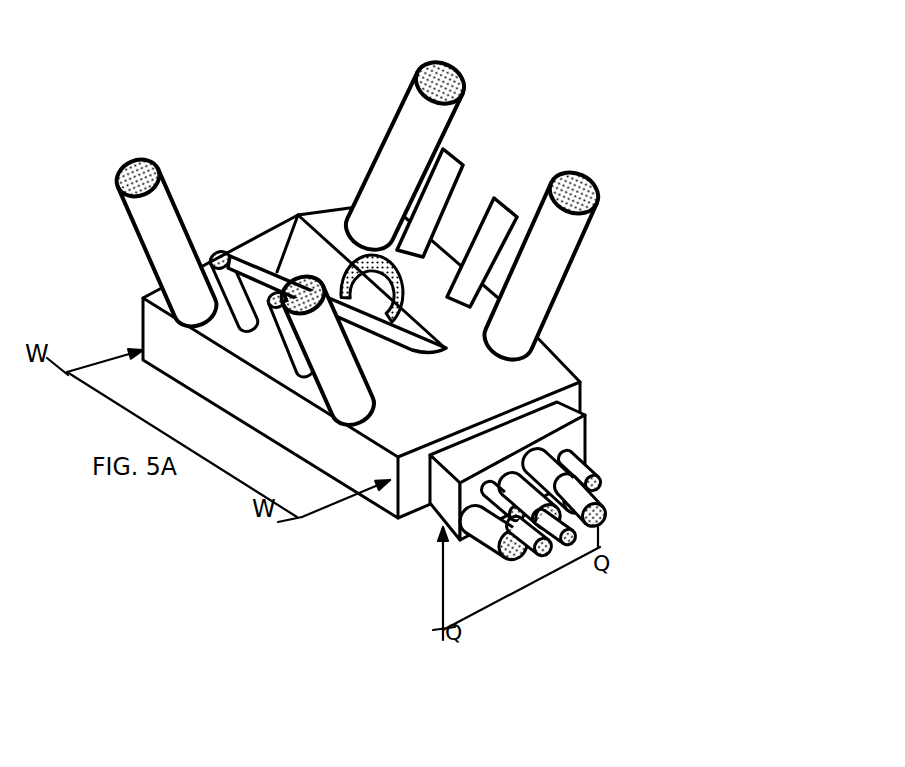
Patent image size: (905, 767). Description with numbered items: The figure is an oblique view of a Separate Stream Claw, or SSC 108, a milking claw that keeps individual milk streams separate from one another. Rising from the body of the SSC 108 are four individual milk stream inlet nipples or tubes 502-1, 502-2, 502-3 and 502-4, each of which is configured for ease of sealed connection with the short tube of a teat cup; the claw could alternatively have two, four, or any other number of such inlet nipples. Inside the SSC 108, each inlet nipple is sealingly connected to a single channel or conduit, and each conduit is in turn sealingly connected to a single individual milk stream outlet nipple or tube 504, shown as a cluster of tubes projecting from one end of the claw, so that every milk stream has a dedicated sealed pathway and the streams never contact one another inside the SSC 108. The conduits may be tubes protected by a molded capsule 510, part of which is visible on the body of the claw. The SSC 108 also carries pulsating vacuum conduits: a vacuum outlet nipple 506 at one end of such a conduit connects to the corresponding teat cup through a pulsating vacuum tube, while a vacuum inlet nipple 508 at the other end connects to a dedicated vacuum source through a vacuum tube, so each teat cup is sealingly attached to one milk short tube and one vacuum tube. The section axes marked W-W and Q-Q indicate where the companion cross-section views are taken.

The Separate Stream Claw (SSC) 108 is at (526, 46).
The individual milk stream inlet nipple 502-1 is at (568, 265).
The individual milk stream inlet nipple 502-2 is at (338, 367).
The individual milk stream inlet nipple 502-3 is at (400, 117).
The individual milk stream inlet nipple 502-4 is at (137, 228).
The individual milk stream outlet nipple 504 is at (528, 483).
The vacuum outlet nipple 506 is at (200, 250).
The vacuum inlet nipple 508 is at (480, 470).
The molded capsule 510 is at (333, 210).